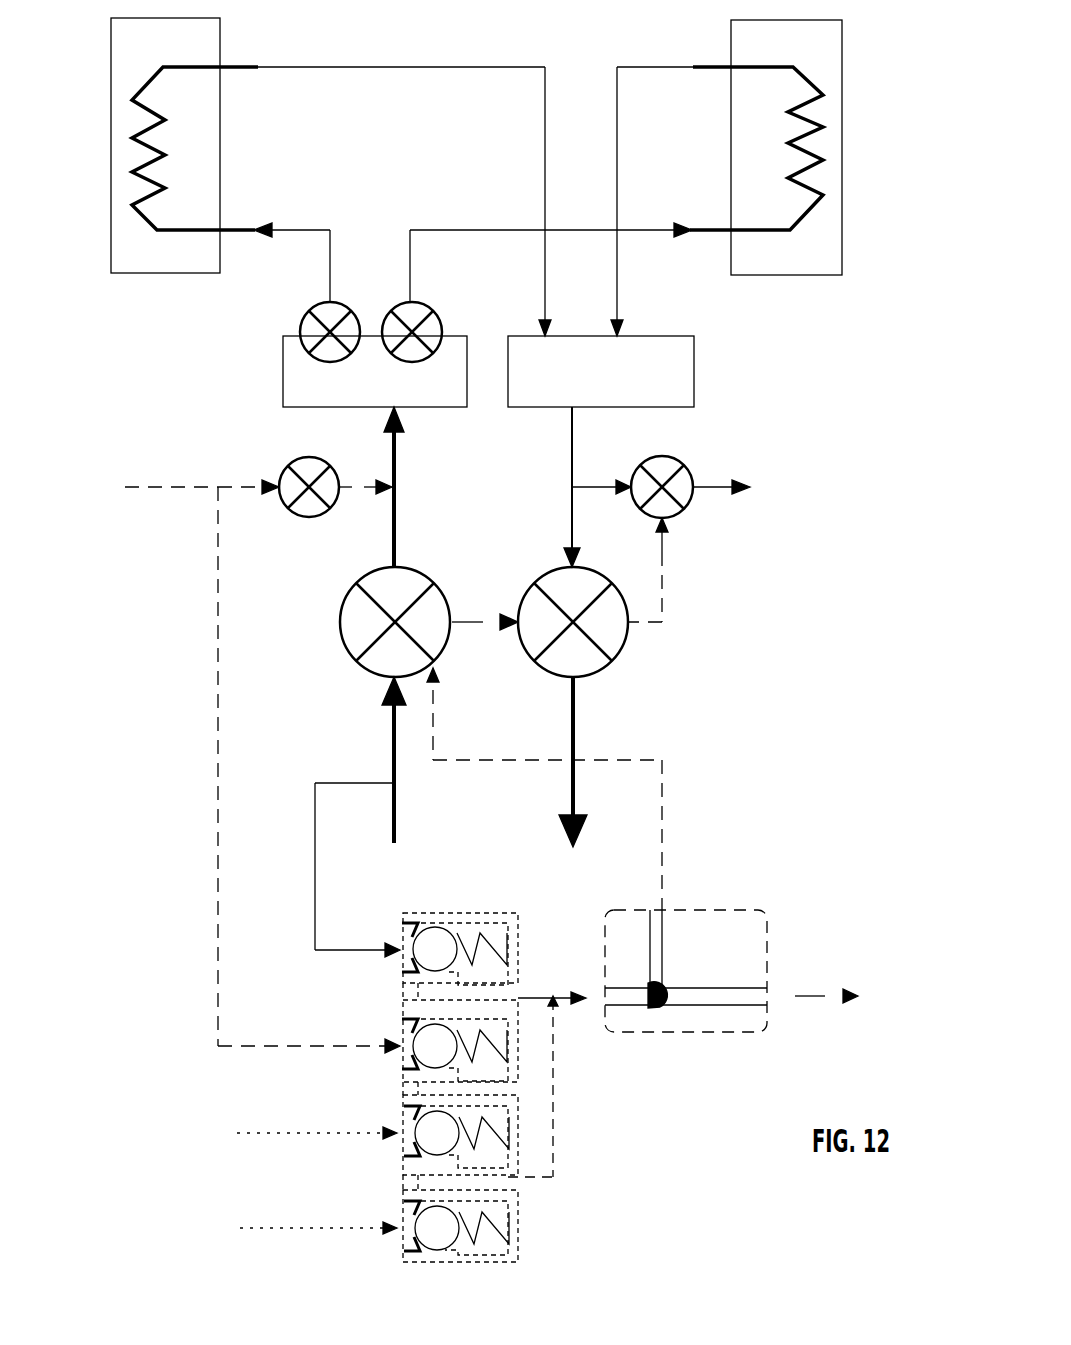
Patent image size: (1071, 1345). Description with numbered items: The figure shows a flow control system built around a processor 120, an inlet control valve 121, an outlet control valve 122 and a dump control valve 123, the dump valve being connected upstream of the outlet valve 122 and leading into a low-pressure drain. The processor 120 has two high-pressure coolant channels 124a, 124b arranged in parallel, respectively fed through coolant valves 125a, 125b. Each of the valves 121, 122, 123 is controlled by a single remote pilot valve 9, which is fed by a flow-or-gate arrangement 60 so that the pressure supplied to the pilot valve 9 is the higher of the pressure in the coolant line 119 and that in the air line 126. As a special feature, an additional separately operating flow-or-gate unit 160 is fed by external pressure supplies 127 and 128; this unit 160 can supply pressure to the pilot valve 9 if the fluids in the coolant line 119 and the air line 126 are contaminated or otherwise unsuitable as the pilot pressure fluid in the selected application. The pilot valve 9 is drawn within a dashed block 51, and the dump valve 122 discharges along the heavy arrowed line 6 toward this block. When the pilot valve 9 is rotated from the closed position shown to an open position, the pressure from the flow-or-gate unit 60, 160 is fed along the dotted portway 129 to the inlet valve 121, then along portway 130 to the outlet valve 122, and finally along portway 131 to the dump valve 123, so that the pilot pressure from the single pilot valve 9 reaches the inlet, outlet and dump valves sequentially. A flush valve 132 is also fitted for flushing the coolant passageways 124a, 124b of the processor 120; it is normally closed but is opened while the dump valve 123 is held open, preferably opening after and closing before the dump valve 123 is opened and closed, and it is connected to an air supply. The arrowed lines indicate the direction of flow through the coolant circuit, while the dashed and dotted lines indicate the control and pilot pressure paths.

The processor 120 is at (776, 326).
The coolant channel 124a is at (278, 225).
The coolant channel 124b is at (460, 226).
The coolant valve 125a is at (318, 303).
The coolant valve 125b is at (420, 305).
The flush valve 132 is at (296, 458).
The dump control valve 123 is at (685, 466).
The inlet control valve 121 is at (348, 638).
The outlet control valve 122 is at (622, 655).
The portway 130 is at (472, 618).
The portway 131 is at (670, 582).
The portway 129 is at (486, 757).
The outlet line 6 is at (580, 712).
The coolant line 119 is at (340, 952).
The air line 126 is at (178, 486).
The external pressure supply 127 is at (338, 1132).
The external pressure supply 128 is at (342, 1226).
The flow or gate arrangement 60 is at (541, 925).
The flow or gate unit 160 is at (526, 1071).
The valve block 51 is at (731, 979).
The pilot valve 9 is at (656, 1010).